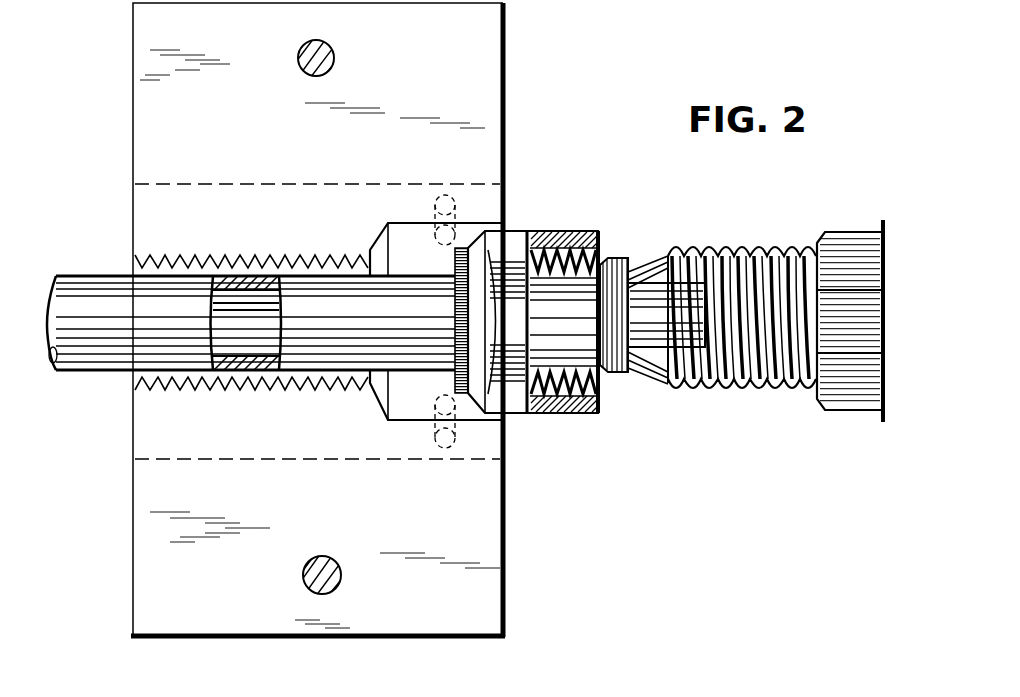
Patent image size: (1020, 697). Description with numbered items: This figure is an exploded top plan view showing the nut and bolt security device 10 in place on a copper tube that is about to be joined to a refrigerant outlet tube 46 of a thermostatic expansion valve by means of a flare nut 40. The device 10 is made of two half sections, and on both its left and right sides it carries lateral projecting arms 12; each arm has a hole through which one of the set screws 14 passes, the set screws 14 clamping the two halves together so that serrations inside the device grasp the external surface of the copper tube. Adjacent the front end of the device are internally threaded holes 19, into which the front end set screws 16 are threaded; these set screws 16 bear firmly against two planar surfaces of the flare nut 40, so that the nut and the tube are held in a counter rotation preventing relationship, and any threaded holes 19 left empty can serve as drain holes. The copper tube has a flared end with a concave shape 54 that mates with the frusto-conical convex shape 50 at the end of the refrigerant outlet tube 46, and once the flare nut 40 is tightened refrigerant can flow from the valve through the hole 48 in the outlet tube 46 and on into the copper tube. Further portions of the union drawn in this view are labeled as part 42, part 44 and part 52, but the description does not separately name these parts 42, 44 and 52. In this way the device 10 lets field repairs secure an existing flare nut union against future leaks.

The nut and bolt security device 10 is at (593, 76).
The lateral projecting arms 12 is at (507, 603).
The set screws 14 is at (333, 47).
The front end set screws 16 is at (442, 318).
The internally threaded holes 19 is at (443, 195).
The flare nut 40 is at (567, 415).
The nut 42 is at (565, 232).
The threaded bolt 44 is at (798, 393).
The refrigerant outlet tube 46 is at (797, 213).
The hole 48 is at (660, 258).
The frusto-conical convex shape 50 is at (620, 372).
The washer 52 is at (630, 372).
The concave shape 54 is at (633, 273).